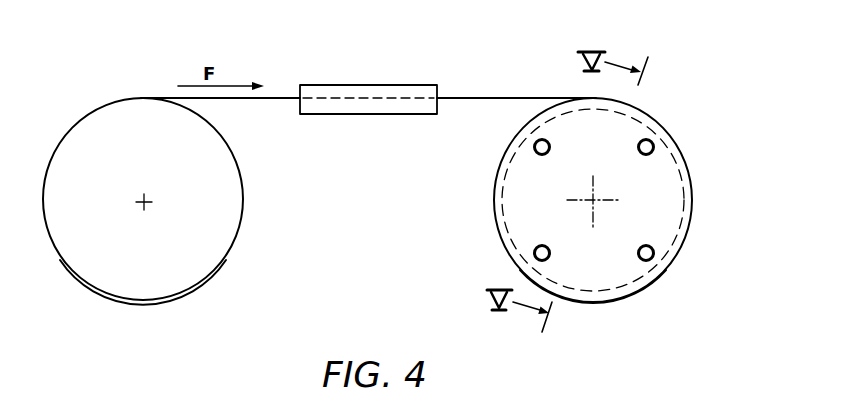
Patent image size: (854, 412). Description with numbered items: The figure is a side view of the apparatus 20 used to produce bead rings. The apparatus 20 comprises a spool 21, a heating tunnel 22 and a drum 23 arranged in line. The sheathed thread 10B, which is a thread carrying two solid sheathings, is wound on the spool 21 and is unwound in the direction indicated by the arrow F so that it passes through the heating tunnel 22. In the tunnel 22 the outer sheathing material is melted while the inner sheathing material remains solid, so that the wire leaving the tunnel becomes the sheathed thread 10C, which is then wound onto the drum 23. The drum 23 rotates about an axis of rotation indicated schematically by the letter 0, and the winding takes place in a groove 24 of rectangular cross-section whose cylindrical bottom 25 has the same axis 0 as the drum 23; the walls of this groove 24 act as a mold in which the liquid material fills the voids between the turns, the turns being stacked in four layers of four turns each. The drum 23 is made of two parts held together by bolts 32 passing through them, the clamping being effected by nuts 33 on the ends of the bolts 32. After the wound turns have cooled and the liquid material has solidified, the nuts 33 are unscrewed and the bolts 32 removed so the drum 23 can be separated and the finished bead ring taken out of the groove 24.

The axis of rotation 0 is at (594, 201).
The sheathed thread 10B is at (283, 99).
The sheathed thread 10C is at (514, 96).
The apparatus 20 is at (598, 155).
The spool 21 is at (238, 237).
The heating tunnel 22 is at (344, 116).
The drum 23 is at (692, 230).
The groove 24 is at (662, 272).
The cylindrical bottom 25 is at (643, 120).
The bolts 32 is at (537, 149).
The nuts 33 is at (537, 145).